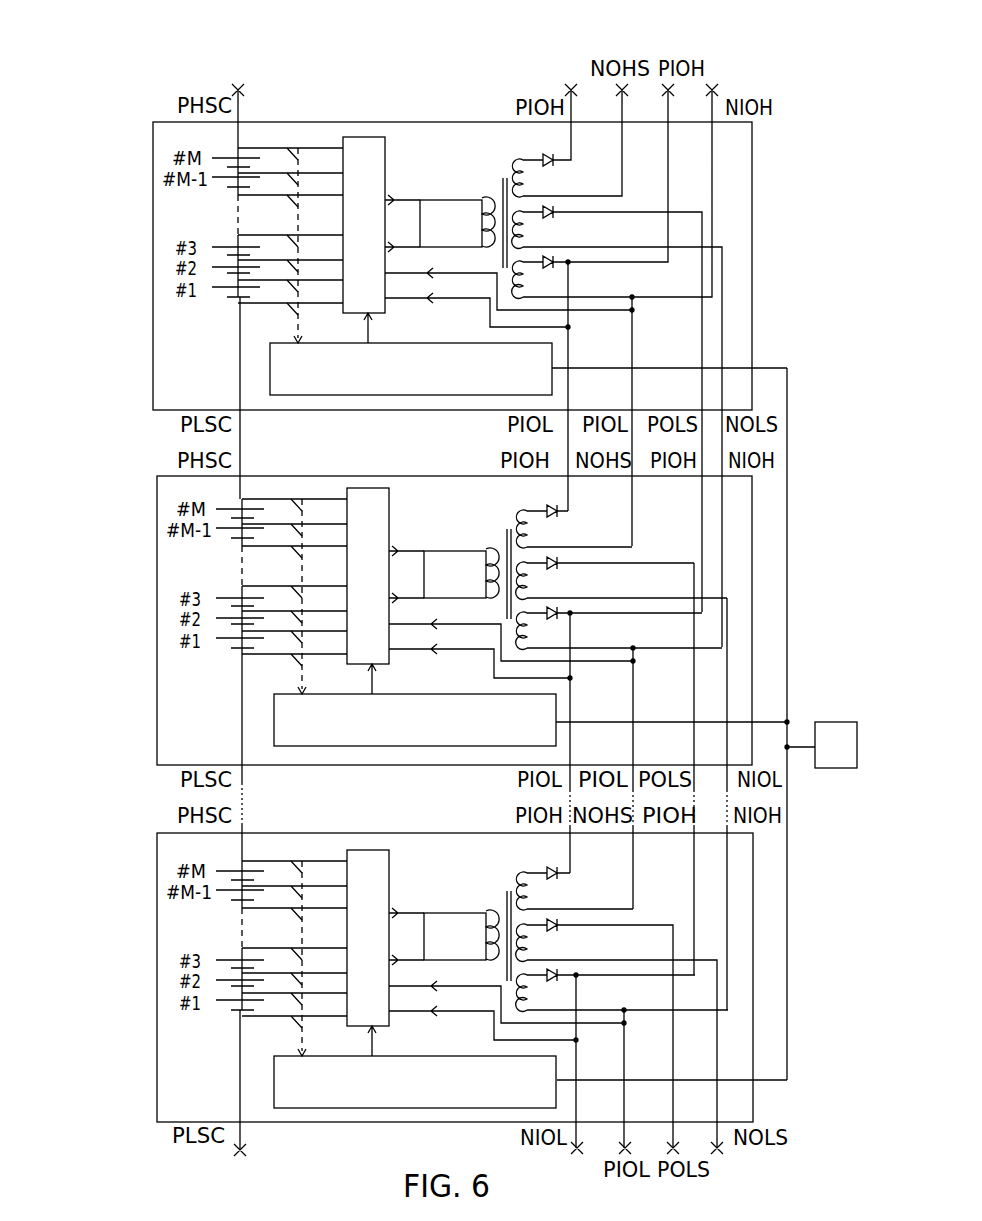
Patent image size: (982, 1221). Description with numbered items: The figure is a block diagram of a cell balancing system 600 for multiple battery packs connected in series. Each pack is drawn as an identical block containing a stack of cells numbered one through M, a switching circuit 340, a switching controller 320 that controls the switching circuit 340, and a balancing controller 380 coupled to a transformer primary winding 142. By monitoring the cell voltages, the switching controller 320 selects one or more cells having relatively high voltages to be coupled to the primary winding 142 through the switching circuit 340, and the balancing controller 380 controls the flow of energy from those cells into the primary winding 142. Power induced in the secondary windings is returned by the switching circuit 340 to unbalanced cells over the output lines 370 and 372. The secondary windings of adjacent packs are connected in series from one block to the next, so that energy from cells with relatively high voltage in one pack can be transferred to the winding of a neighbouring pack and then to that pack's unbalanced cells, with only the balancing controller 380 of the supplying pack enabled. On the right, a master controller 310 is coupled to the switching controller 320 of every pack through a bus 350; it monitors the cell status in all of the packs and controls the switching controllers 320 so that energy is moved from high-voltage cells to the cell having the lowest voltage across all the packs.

The cell balancing system 600 is at (146, 135).
The switching circuit 340 is at (380, 245).
The balancing controller 380 is at (468, 239).
The switching controller 320 is at (417, 381).
The primary winding 142 is at (491, 206).
The output line 370 is at (441, 273).
The output line 372 is at (441, 301).
The bus 350 is at (788, 710).
The master controller 310 is at (836, 745).